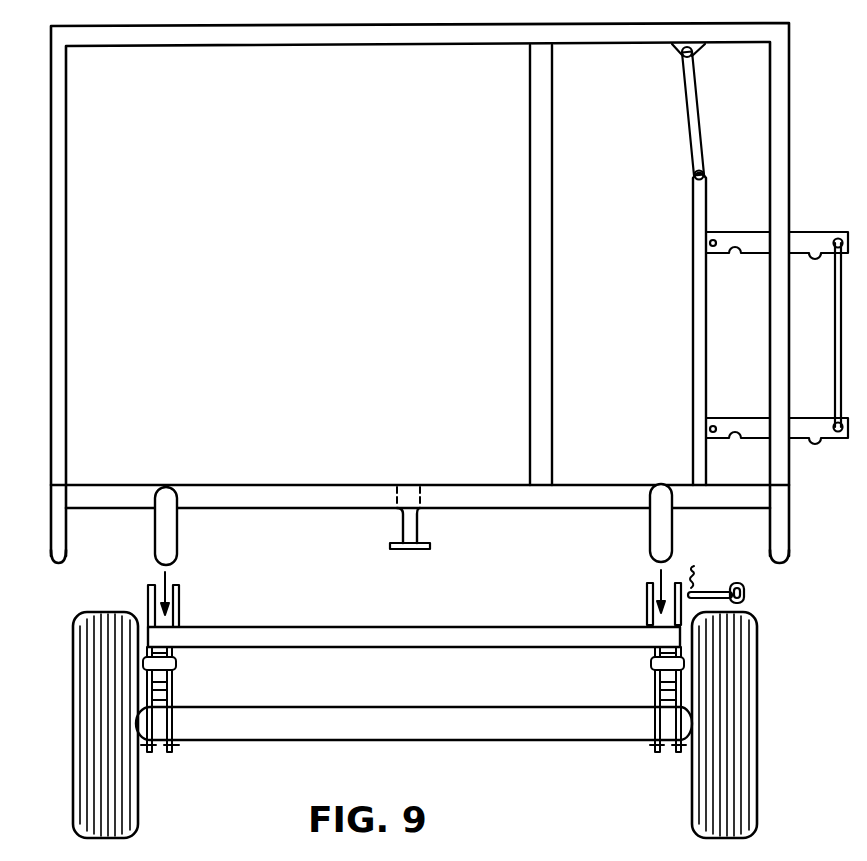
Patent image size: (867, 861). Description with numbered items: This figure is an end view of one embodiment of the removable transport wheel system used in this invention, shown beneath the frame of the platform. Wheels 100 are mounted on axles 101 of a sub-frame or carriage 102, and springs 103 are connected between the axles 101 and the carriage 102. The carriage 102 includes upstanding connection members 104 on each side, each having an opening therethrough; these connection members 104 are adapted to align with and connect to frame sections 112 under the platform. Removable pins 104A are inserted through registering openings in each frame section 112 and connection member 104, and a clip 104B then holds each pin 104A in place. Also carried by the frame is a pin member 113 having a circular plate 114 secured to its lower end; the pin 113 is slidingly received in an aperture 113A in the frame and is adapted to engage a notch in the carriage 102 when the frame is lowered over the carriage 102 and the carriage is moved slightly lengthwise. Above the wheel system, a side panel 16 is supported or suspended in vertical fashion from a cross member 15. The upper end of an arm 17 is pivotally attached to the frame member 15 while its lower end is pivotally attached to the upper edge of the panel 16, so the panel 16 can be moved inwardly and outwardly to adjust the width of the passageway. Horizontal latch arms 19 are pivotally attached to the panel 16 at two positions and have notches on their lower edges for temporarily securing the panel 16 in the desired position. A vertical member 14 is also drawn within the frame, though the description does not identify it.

The vertical divider member 14 is at (532, 262).
The cross member 15 is at (594, 44).
The side panel 16 is at (697, 321).
The arm 17 is at (687, 103).
The latch arms 19 is at (755, 236).
The wheels 100 is at (95, 798).
The axles 101 is at (335, 707).
The carriage 102 is at (340, 620).
The springs 103 is at (170, 687).
The connection members 104 is at (178, 603).
The removable pins 104A is at (745, 595).
The clip 104B is at (695, 572).
The frame sections 112 is at (168, 525).
The pin member 113 is at (393, 526).
The aperture 113A is at (408, 493).
The circular plate 114 is at (430, 546).